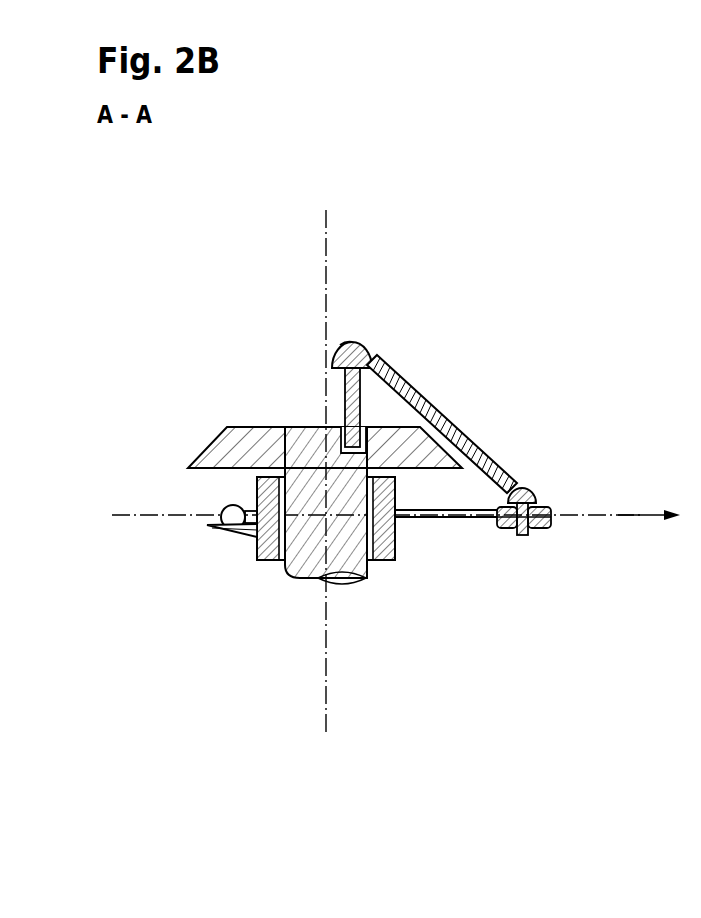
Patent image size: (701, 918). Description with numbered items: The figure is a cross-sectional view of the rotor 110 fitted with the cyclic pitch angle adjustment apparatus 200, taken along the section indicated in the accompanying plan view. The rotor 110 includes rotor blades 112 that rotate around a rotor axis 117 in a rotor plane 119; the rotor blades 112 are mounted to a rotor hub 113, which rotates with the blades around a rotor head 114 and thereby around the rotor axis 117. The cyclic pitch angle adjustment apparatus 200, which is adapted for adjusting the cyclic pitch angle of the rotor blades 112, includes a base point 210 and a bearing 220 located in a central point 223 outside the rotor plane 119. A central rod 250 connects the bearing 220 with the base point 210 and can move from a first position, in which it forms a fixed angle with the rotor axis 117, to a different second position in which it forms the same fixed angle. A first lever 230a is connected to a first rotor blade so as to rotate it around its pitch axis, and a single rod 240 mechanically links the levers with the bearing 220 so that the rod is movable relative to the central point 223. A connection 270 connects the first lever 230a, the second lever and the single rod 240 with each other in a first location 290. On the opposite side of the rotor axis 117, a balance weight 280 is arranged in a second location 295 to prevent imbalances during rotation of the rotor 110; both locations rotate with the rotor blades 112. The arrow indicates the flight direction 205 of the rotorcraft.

The rotor 110 is at (193, 233).
The rotor blades 112 is at (225, 536).
The rotor hub 113 is at (267, 562).
The rotor head 114 is at (243, 427).
The rotor axis 117 is at (326, 684).
The rotor plane 119 is at (577, 520).
The cyclic pitch angle adjustment apparatus 200 is at (452, 330).
The flight direction 205 is at (640, 520).
The base point 210 is at (325, 462).
The bearing 220 is at (350, 345).
The central point 223 is at (353, 326).
The first lever 230a is at (455, 520).
The single rod 240 is at (432, 408).
The central rod 250 is at (345, 397).
The connection 270 is at (538, 497).
The balance weight 280 is at (226, 507).
The first location 290 is at (563, 506).
The second location 295 is at (202, 528).